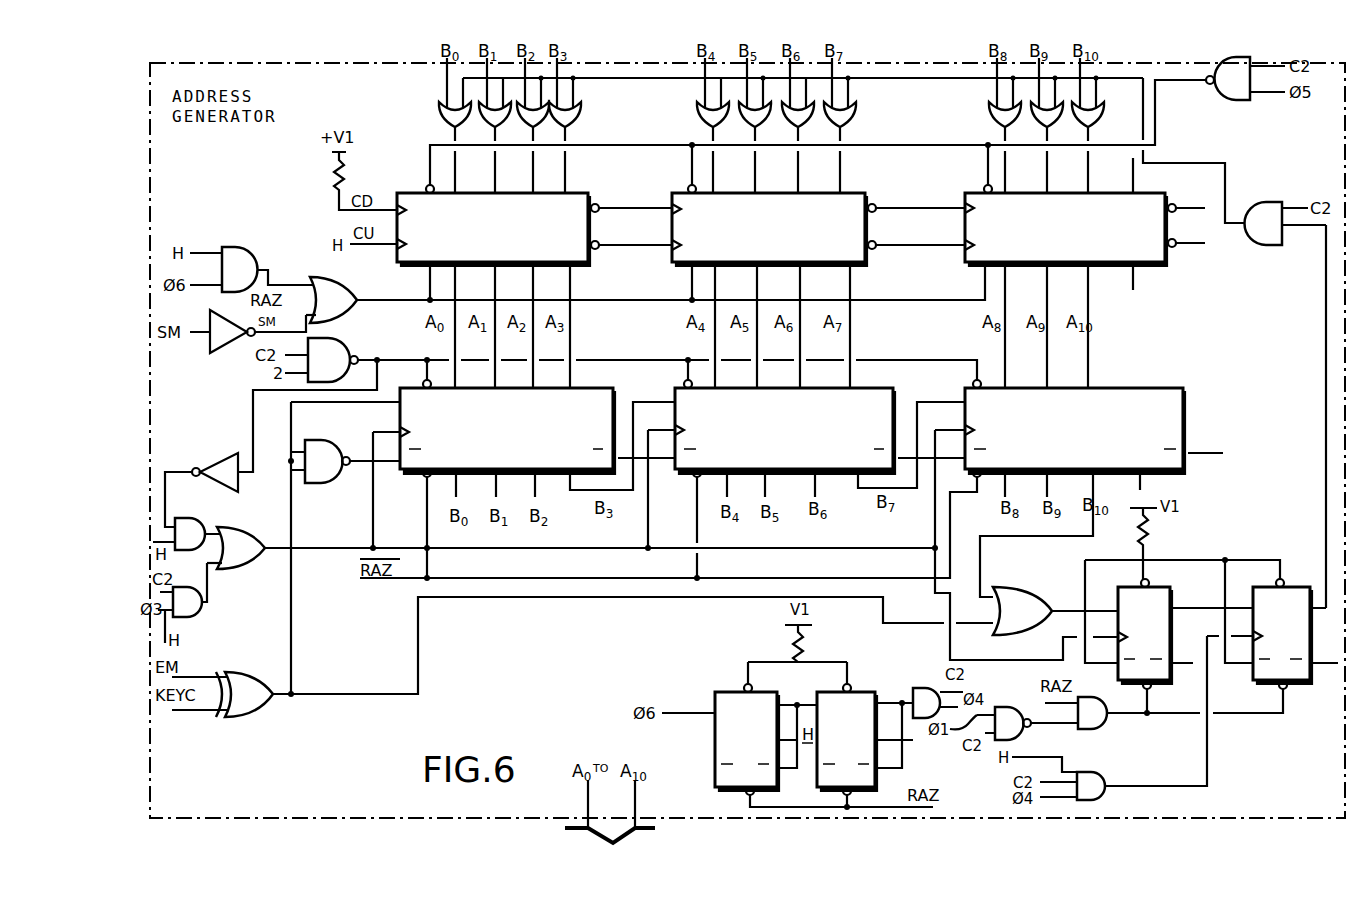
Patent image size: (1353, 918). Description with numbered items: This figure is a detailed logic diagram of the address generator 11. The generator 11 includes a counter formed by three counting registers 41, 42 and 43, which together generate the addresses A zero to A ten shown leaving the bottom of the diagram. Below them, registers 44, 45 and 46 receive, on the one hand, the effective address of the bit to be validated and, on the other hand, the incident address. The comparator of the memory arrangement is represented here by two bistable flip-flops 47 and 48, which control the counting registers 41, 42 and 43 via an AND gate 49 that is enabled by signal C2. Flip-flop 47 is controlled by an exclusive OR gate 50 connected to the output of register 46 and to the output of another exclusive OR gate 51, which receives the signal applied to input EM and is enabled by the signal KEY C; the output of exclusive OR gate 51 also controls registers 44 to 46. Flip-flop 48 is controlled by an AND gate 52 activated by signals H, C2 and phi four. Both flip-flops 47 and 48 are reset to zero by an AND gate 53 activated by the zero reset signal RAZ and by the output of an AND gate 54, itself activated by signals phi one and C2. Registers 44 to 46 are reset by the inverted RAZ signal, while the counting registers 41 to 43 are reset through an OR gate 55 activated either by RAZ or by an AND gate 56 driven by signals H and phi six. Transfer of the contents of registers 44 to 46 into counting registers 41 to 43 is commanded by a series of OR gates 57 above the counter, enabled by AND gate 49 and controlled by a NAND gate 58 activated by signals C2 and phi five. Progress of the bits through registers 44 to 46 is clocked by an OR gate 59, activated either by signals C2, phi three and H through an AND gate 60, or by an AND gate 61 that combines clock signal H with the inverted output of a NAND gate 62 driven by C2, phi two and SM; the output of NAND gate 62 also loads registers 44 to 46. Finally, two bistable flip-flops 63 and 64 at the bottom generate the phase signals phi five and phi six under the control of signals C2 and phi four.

The address generator 11 is at (323, 807).
The counting register 41 is at (500, 237).
The counting register 42 is at (776, 237).
The counting register 43 is at (1071, 237).
The register 44 is at (517, 438).
The register 45 is at (785, 436).
The register 46 is at (1078, 436).
The bistable flip-flop 47 is at (1160, 592).
The bistable flip-flop 48 is at (1289, 595).
The AND gate 49 is at (1274, 232).
The exclusive OR gate 50 is at (1028, 619).
The exclusive OR gate 51 is at (253, 703).
The AND gate 52 is at (1096, 795).
The AND gate 53 is at (1097, 722).
The AND gate 54 is at (1012, 708).
The OR gate 55 is at (338, 309).
The AND gate 56 is at (244, 280).
The OR gates 57 is at (697, 108).
The NAND gate 58 is at (1242, 88).
The OR gate 59 is at (248, 557).
The AND gate 60 is at (193, 611).
The AND gate 61 is at (194, 543).
The NAND gate 62 is at (335, 369).
The bistable flip-flop 63 is at (857, 700).
The bistable flip-flop 64 is at (729, 700).